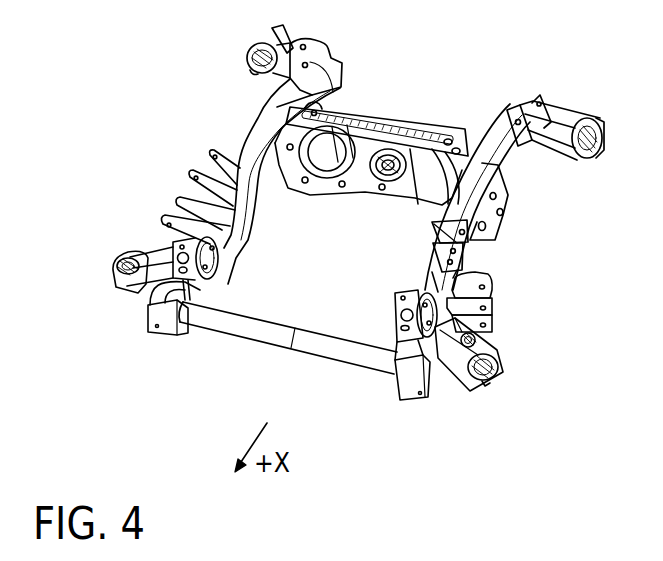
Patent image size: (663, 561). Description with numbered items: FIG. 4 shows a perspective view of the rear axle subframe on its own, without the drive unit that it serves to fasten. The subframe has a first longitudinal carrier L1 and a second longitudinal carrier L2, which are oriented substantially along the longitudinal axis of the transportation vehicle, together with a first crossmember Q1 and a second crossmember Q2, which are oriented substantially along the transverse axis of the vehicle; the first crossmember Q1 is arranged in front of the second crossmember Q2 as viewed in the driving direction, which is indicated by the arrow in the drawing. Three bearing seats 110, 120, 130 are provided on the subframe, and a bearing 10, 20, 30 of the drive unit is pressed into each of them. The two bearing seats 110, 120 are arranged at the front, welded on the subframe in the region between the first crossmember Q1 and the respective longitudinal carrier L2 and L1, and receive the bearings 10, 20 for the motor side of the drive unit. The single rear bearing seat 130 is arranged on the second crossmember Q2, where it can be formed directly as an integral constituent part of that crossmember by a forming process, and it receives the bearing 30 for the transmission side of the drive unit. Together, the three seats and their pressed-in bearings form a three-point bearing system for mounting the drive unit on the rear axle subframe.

The first longitudinal carrier L1 is at (507, 169).
The second longitudinal carrier L2 is at (245, 132).
The first crossmember Q1 is at (316, 355).
The second crossmember Q2 is at (398, 116).
The bearing 10 is at (217, 269).
The bearing 20 is at (440, 330).
The bearing 30 is at (388, 178).
The bearing seat 110 is at (180, 243).
The bearing seat 120 is at (397, 303).
The bearing seat 130 is at (357, 168).